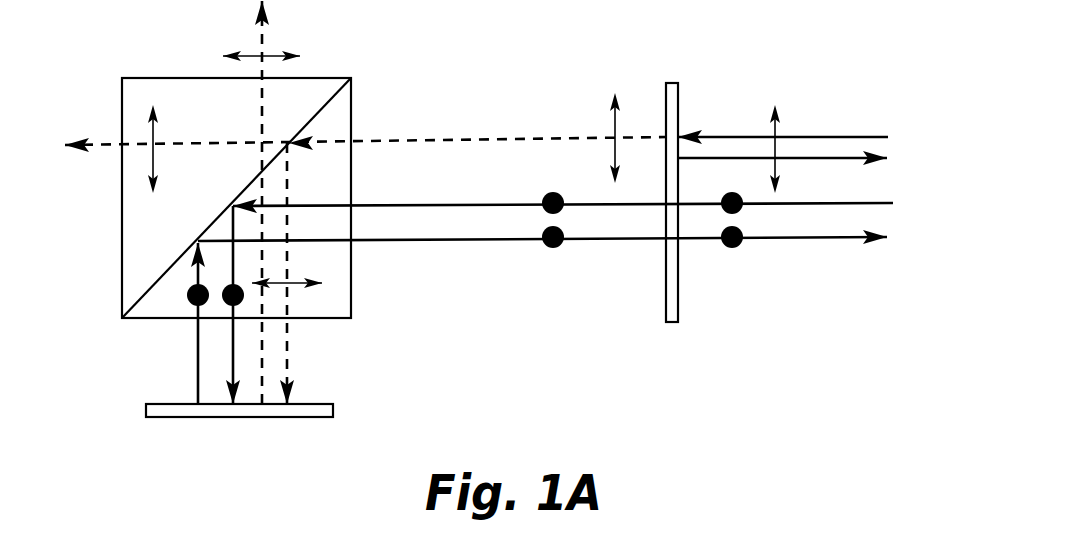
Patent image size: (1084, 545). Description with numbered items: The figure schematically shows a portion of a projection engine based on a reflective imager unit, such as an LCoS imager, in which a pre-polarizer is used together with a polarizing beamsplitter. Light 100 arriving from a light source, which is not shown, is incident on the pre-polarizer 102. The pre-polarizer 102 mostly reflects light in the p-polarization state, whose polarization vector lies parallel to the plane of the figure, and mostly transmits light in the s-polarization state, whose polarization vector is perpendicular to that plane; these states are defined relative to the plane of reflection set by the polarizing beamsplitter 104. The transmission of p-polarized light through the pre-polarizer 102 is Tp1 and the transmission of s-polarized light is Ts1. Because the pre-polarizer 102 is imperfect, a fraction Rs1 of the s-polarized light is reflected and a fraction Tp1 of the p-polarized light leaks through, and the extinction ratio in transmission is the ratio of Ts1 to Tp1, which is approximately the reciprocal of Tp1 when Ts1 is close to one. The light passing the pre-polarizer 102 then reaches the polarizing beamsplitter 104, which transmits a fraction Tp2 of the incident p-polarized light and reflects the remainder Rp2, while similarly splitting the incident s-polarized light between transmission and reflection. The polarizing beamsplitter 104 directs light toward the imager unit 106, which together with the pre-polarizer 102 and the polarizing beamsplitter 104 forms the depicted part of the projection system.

The light 100 is at (818, 135).
The pre-polarizer 102 is at (678, 93).
The polarizing beamsplitter 104 is at (330, 78).
The imager unit 106 is at (308, 413).
The transmission of p-polarized light through the pre-polarizer Tp1 is at (608, 113).
The fraction of p-polarized light transmitted by the PBS Tp2 is at (230, 143).
The transmission of s-polarized light through the pre-polarizer Ts1 is at (557, 278).
The fraction of s-polarized light reflected by the pre-polarizer Rs1 is at (832, 160).
The fraction of p-polarized light reflected by the PBS Rp2 is at (287, 352).